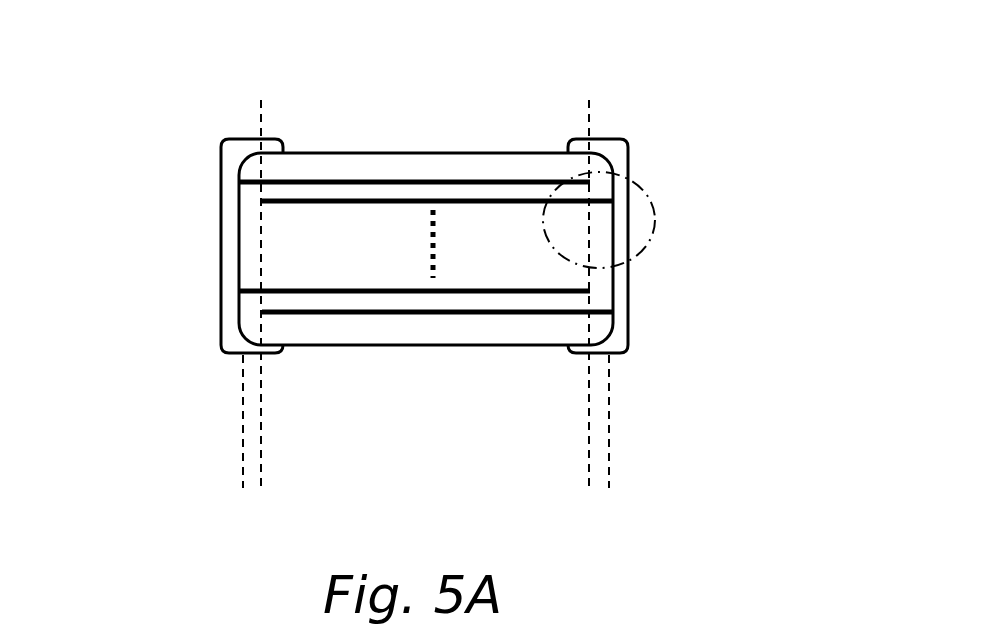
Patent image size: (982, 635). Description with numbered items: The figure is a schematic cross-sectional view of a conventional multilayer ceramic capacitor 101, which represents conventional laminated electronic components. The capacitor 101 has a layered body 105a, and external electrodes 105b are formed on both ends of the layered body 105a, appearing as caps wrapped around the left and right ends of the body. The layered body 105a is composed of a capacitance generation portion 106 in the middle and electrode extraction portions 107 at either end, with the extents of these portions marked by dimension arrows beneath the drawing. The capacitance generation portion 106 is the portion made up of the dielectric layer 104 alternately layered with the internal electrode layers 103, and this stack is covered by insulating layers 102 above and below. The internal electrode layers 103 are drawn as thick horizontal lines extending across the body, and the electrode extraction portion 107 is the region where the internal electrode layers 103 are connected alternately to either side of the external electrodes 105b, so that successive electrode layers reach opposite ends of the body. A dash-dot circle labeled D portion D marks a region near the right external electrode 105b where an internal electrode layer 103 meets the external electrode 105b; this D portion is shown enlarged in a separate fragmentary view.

The multilayer ceramic capacitor 101 is at (193, 128).
The insulating layers 102 is at (340, 162).
The internal electrode layers 103 is at (393, 288).
The dielectric layer 104 is at (453, 275).
The layered body 105a is at (302, 143).
The external electrodes 105b is at (245, 152).
The capacitance generation portion 106 is at (577, 440).
The electrode extraction portions 107 is at (305, 477).
The D portion D is at (645, 186).